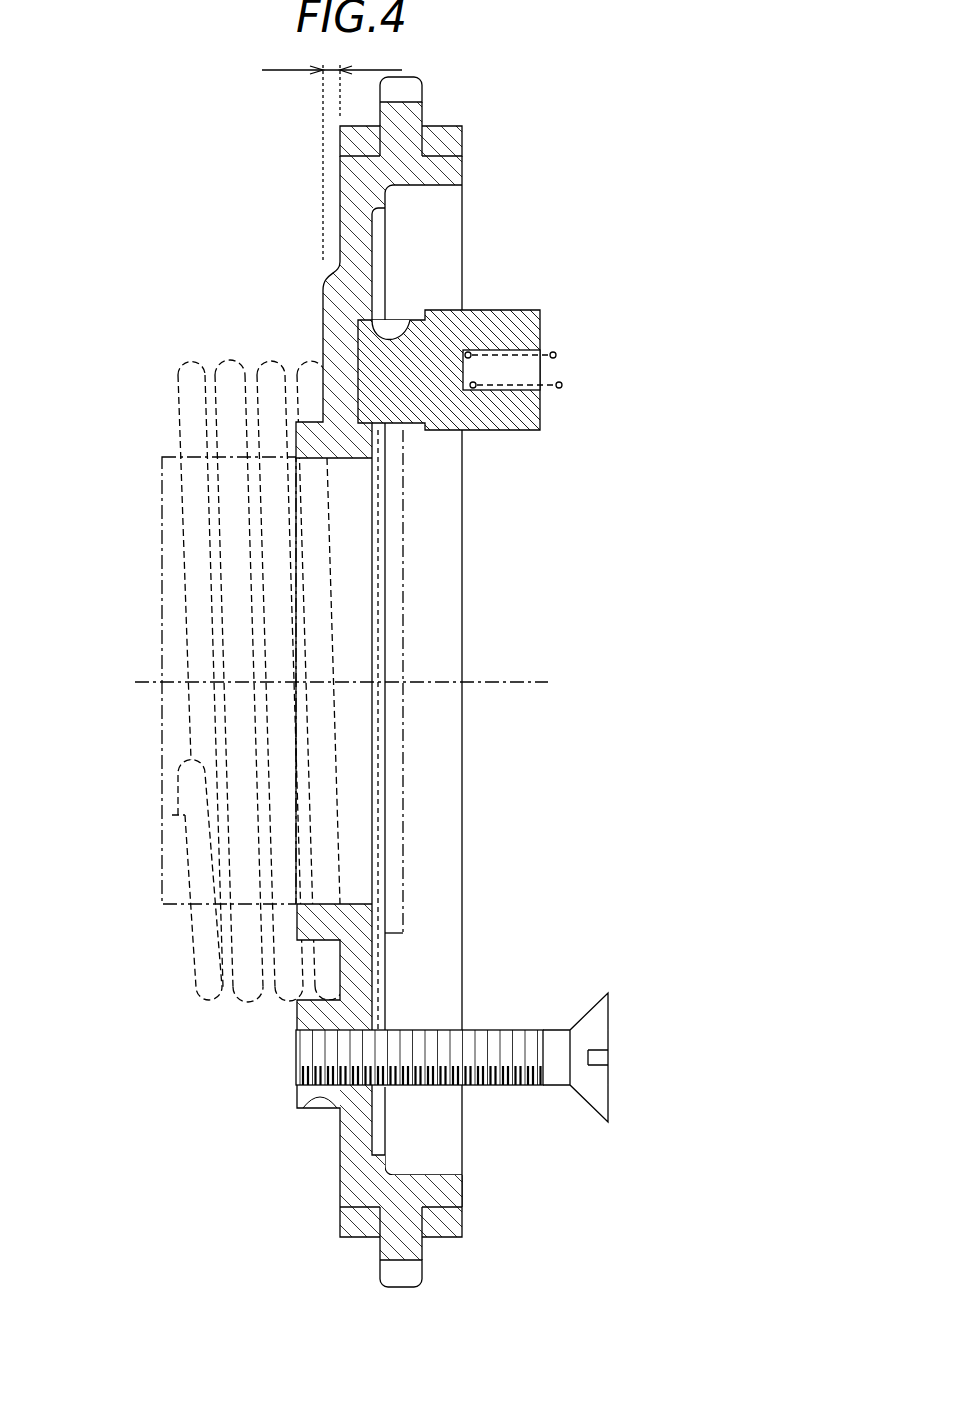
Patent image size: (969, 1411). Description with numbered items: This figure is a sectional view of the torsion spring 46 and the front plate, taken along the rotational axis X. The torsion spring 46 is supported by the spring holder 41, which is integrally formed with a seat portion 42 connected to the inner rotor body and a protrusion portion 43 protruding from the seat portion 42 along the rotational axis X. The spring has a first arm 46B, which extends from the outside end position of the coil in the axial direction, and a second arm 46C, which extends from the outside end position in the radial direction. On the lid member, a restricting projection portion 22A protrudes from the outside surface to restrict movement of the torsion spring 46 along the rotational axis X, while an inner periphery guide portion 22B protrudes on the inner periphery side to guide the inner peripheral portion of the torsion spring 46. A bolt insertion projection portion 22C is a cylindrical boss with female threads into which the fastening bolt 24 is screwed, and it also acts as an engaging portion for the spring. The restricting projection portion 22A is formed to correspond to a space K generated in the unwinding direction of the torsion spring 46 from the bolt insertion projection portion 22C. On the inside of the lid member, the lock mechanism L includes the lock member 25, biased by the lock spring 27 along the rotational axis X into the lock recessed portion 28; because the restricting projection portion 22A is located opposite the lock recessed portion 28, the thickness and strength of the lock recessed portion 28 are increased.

The restricting projection portion 22A is at (323, 283).
The inner periphery guide portion 22B is at (297, 420).
The bolt insertion projection portion 22C is at (320, 1106).
The fastening bolt 24 is at (547, 1077).
The lock member 25 is at (512, 310).
The lock spring 27 is at (557, 355).
The lock recessed portion 28 is at (407, 322).
The spring holder 41 is at (160, 711).
The seat portion 42 is at (404, 910).
The protrusion portion 43 is at (193, 963).
The torsion spring 46 is at (194, 357).
The first arm 46B is at (168, 815).
The second arm 46C is at (300, 1097).
The space K is at (332, 152).
The lock mechanism L is at (527, 227).
The rotational axis X is at (351, 682).